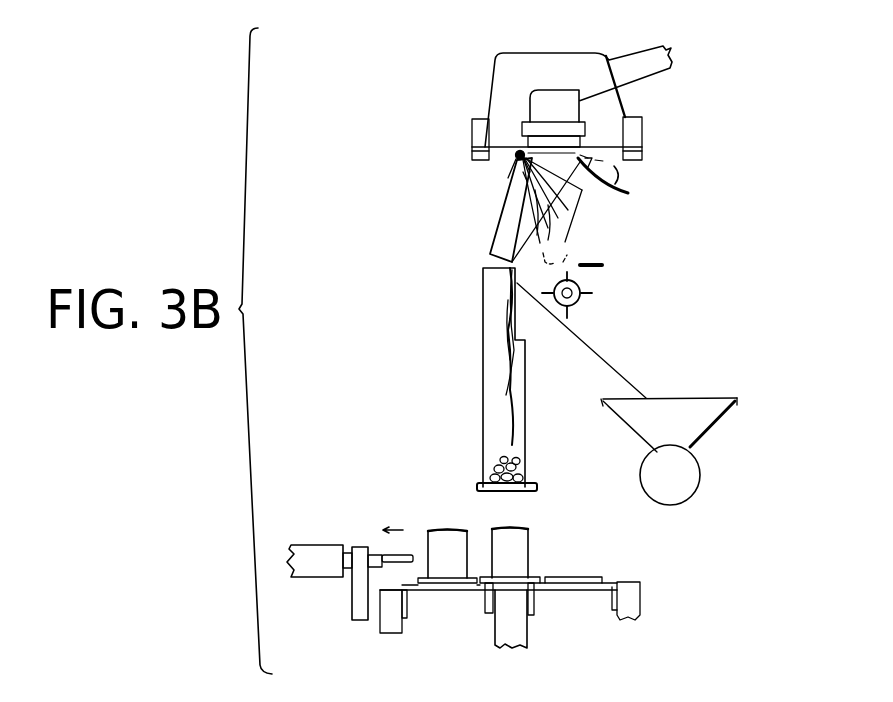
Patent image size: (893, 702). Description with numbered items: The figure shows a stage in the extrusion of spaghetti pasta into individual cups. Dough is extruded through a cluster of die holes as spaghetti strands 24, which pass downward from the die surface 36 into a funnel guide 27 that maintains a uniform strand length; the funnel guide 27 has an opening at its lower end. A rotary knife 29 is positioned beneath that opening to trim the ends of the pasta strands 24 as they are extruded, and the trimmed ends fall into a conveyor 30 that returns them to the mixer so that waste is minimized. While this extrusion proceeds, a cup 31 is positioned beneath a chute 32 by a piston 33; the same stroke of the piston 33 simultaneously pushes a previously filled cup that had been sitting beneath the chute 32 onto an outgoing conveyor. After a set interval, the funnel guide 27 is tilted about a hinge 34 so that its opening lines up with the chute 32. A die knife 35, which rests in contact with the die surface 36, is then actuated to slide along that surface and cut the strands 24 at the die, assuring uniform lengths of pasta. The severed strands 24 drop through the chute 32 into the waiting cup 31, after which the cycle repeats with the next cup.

The spaghetti strands 24 is at (570, 213).
The funnel guide 27 is at (503, 212).
The rotary knife 29 is at (580, 301).
The conveyor 30 is at (700, 471).
The cup 31 is at (530, 548).
The chute 32 is at (483, 378).
The piston 33 is at (390, 556).
The hinge 34 is at (517, 158).
The die knife 35 is at (630, 194).
The die surface 36 is at (518, 152).